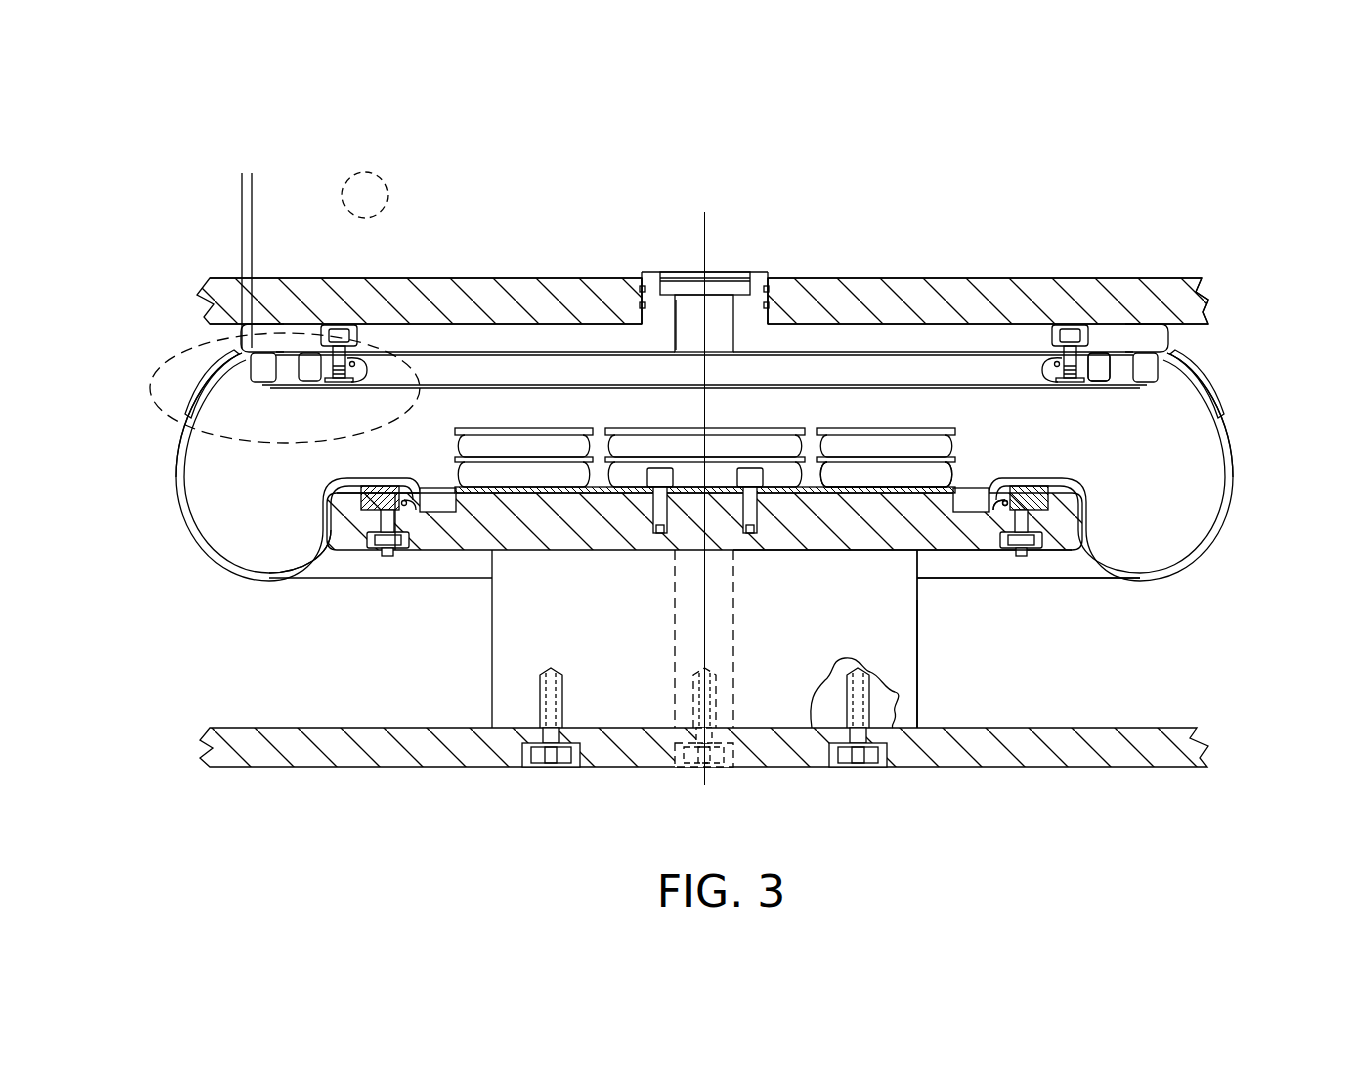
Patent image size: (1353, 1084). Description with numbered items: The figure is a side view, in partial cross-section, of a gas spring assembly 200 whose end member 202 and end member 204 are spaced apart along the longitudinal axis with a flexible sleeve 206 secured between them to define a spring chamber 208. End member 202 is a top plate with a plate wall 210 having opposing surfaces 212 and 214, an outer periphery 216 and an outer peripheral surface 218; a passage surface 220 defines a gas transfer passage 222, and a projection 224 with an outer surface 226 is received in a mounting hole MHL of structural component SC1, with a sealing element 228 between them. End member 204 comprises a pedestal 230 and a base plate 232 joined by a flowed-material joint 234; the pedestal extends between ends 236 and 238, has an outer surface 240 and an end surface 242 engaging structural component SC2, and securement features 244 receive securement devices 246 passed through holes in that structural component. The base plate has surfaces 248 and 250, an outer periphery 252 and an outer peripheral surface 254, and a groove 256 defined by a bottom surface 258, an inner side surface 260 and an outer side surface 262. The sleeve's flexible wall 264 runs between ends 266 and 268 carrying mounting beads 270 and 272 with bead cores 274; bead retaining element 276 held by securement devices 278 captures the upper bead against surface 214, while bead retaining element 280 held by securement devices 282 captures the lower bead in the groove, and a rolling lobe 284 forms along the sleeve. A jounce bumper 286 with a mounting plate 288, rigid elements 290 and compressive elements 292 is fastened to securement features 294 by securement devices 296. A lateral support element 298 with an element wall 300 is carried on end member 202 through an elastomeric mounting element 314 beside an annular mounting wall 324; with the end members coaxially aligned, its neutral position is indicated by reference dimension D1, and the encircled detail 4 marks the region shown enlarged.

The gas spring assembly 200 is at (706, 482).
The end member 202 is at (737, 345).
The end member 204 is at (700, 608).
The flexible sleeve 206 is at (706, 448).
The spring chamber 208 is at (1187, 465).
The plate wall 210 is at (928, 336).
The surface 212 is at (487, 333).
The surface 214 is at (550, 360).
The outer periphery 216 is at (1152, 333).
The outer peripheral surface 218 is at (1168, 337).
The passage surface 220 is at (725, 322).
The gas transfer passage 222 is at (689, 298).
The projection 224 is at (752, 300).
The outer surface 226 is at (765, 328).
The sealing element 228 is at (641, 305).
The pedestal 230 is at (900, 676).
The base plate 232 is at (603, 538).
The flowed-material joint 234 is at (919, 554).
The end 236 is at (990, 567).
The end 238 is at (960, 704).
The outer surface 240 is at (917, 628).
The end surface 242 is at (626, 735).
The securement features 244 is at (532, 690).
The securement device 246 is at (550, 763).
The surface 248 is at (845, 540).
The surface 250 is at (917, 605).
The outer periphery 252 is at (1063, 500).
The outer peripheral surface 254 is at (1082, 553).
The groove 256 is at (438, 489).
The bottom surface 258 is at (442, 553).
The inner side surface 260 is at (493, 552).
The outer side surface 262 is at (348, 550).
The flexible wall 264 is at (1234, 482).
The end 266 is at (392, 371).
The end 268 is at (350, 466).
The mounting bead 270 is at (347, 320).
The mounting bead 272 is at (412, 552).
The bead core 274 is at (358, 362).
The bead retaining element 276 is at (1097, 362).
The securement devices 278 is at (1057, 325).
The bead retaining element 280 is at (1006, 496).
The securement devices 282 is at (1040, 518).
The rolling lobe 284 is at (262, 580).
The jounce bumper 286 is at (863, 410).
The mounting plate 288 is at (628, 487).
The rigid elements 290 is at (482, 460).
The compressive elements 292 is at (948, 466).
The securement features 294 is at (652, 534).
The securement devices 296 is at (750, 470).
The lateral support element 298 is at (220, 362).
The element wall 300 is at (205, 395).
The elastomeric mounting element 314 is at (264, 380).
The annular mounting wall 324 is at (288, 380).
The mounting hole MHL is at (640, 290).
The structural component SC1 is at (1135, 288).
The structural component SC2 is at (1153, 752).
The reference dimension D1 is at (205, 187).
The detail view indicator 4 is at (337, 313).